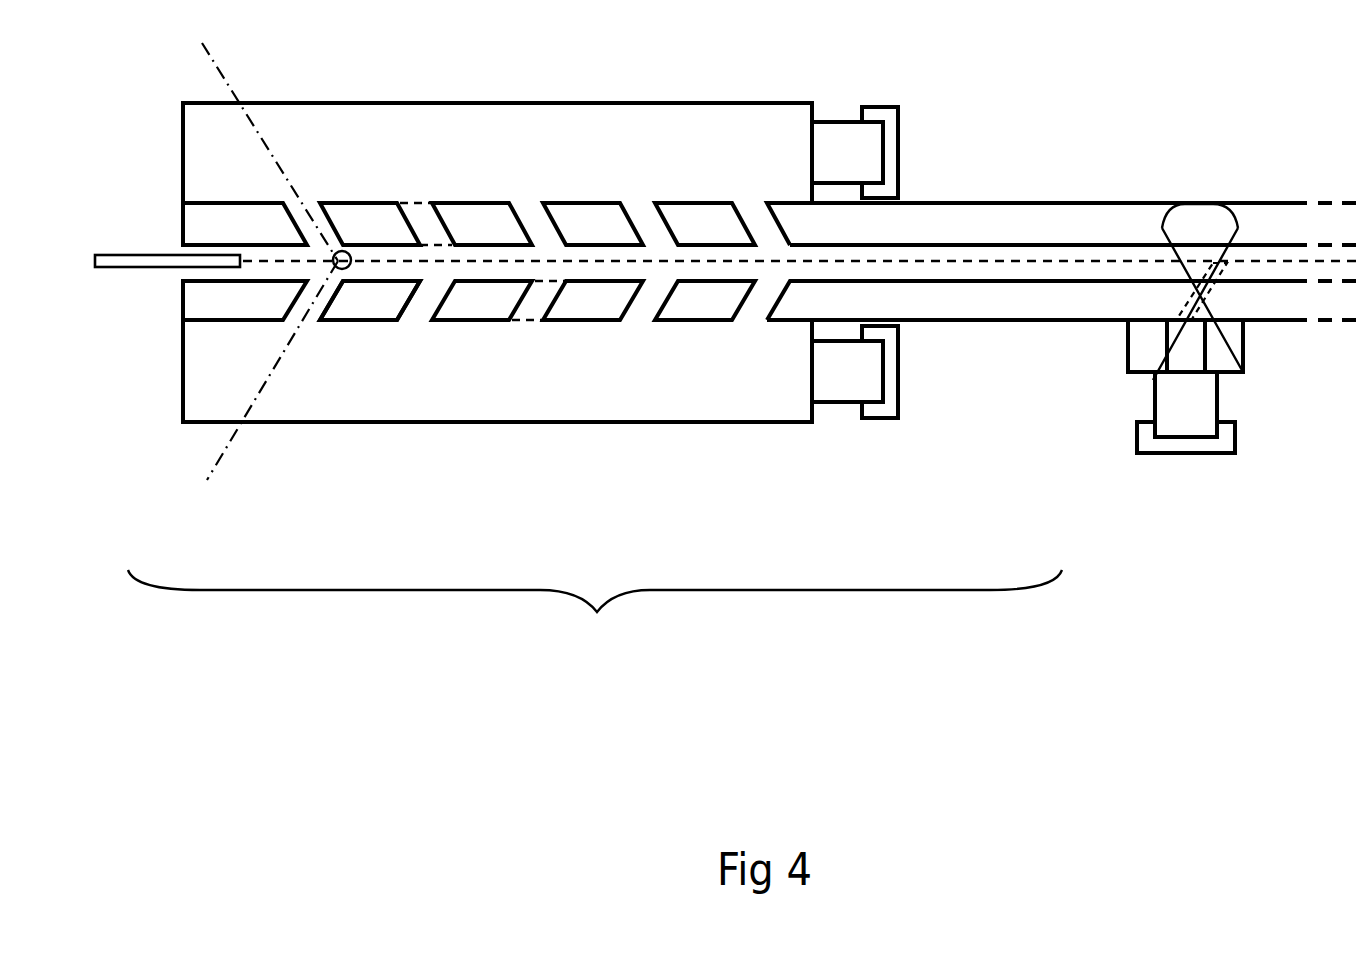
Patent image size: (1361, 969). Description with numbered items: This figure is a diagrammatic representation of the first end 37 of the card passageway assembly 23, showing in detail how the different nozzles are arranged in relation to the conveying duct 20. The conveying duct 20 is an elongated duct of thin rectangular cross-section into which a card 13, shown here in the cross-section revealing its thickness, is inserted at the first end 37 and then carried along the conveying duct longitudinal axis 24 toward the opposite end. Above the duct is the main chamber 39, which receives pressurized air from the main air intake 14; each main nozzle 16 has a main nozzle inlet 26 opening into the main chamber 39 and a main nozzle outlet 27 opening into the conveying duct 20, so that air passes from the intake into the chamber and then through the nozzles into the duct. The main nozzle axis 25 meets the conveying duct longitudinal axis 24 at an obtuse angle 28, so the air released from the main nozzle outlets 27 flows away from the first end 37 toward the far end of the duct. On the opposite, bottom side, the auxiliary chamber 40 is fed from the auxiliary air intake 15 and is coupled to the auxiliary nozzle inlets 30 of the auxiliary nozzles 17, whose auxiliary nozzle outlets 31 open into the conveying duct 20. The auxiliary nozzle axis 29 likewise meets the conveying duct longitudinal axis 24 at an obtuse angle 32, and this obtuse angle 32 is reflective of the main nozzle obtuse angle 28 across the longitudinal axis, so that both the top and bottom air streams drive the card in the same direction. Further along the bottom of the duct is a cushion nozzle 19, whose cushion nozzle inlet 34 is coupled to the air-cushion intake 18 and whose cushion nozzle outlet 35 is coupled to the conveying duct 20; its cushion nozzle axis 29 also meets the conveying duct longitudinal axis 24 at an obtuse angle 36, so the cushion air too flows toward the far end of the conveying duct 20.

The card 13 is at (165, 255).
The main air intake 14 is at (900, 147).
The auxiliary air intake 15 is at (898, 370).
The main nozzle 16 is at (287, 168).
The auxiliary nozzle 17 is at (313, 300).
The air-cushion intake 18 is at (1190, 453).
The cushion nozzle 19 is at (1181, 205).
The conveying duct 20 is at (952, 252).
The card passageway assembly 23 is at (1080, 205).
The conveying duct longitudinal axis 24 is at (1005, 263).
The main nozzle axis 25 is at (214, 66).
The main nozzle inlet 26 is at (408, 203).
The main nozzle outlet 27 is at (441, 243).
The obtuse angle 28 is at (347, 252).
The auxiliary nozzle axis 29 is at (213, 467).
The auxiliary nozzle inlet 30 is at (520, 323).
The auxiliary nozzle outlet 31 is at (535, 282).
The obtuse angle 32 is at (348, 270).
The cushion nozzle inlet 34 is at (1152, 378).
The cushion nozzle outlet 35 is at (1218, 208).
The obtuse angle 36 is at (1253, 320).
The first end 37 is at (595, 623).
The main chamber 39 is at (684, 176).
The auxiliary chamber 40 is at (684, 393).